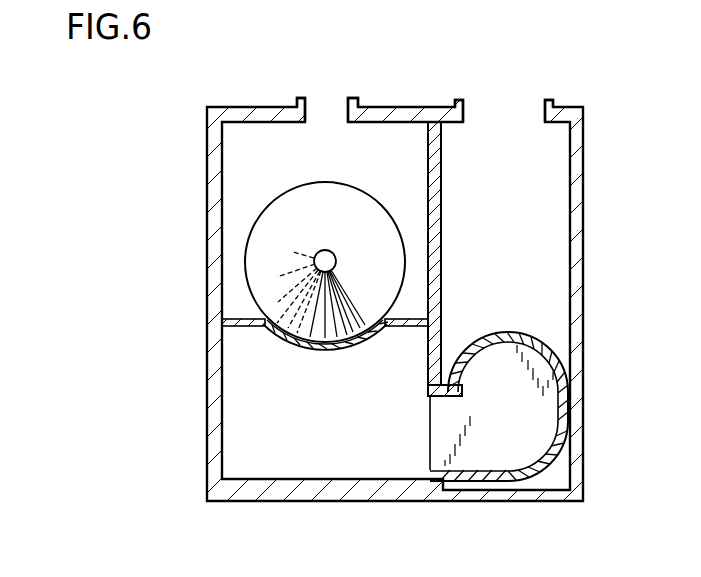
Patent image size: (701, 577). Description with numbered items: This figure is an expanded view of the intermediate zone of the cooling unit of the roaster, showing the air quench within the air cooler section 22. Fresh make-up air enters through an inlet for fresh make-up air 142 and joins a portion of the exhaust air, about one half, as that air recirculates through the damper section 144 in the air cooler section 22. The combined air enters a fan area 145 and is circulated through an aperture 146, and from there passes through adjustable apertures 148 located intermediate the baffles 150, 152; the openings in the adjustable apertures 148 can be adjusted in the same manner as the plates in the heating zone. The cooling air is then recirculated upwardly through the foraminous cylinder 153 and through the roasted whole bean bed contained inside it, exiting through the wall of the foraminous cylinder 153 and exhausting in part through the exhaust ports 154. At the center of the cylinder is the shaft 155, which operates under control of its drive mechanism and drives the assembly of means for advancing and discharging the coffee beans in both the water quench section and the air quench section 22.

The air cooler section 22 is at (407, 178).
The inlet for fresh make-up air 142 is at (465, 112).
The damper section 144 is at (441, 155).
The fan area 145 is at (497, 362).
The aperture 146 is at (448, 397).
The adjustable apertures 148 is at (328, 347).
The baffle 150 is at (280, 340).
The baffle 152 is at (405, 355).
The foraminous cylinder 153 is at (287, 203).
The exhaust ports 154 is at (318, 112).
The shaft 155 is at (333, 252).